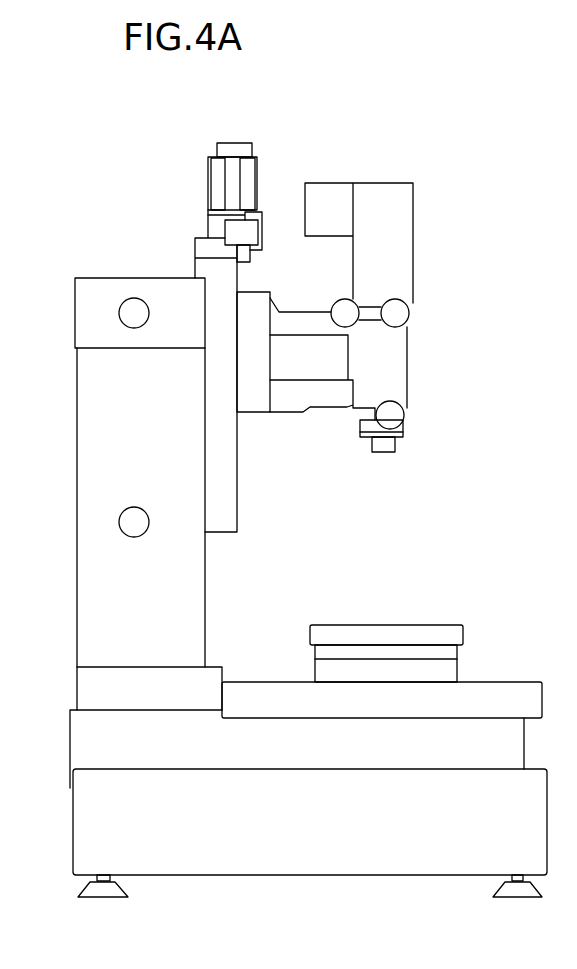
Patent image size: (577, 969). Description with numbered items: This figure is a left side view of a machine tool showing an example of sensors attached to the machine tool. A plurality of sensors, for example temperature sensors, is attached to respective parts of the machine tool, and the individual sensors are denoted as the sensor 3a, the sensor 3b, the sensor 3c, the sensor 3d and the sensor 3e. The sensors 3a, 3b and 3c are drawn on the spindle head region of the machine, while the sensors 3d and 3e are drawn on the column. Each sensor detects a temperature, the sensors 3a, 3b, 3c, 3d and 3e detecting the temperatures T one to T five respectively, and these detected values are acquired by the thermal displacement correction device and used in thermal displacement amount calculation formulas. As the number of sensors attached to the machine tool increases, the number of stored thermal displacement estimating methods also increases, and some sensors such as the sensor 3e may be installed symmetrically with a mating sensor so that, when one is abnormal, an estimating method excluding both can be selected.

The sensor 3a is at (411, 304).
The sensor 3b is at (405, 414).
The sensor 3c is at (355, 301).
The sensor 3d is at (122, 300).
The sensor 3e is at (148, 530).